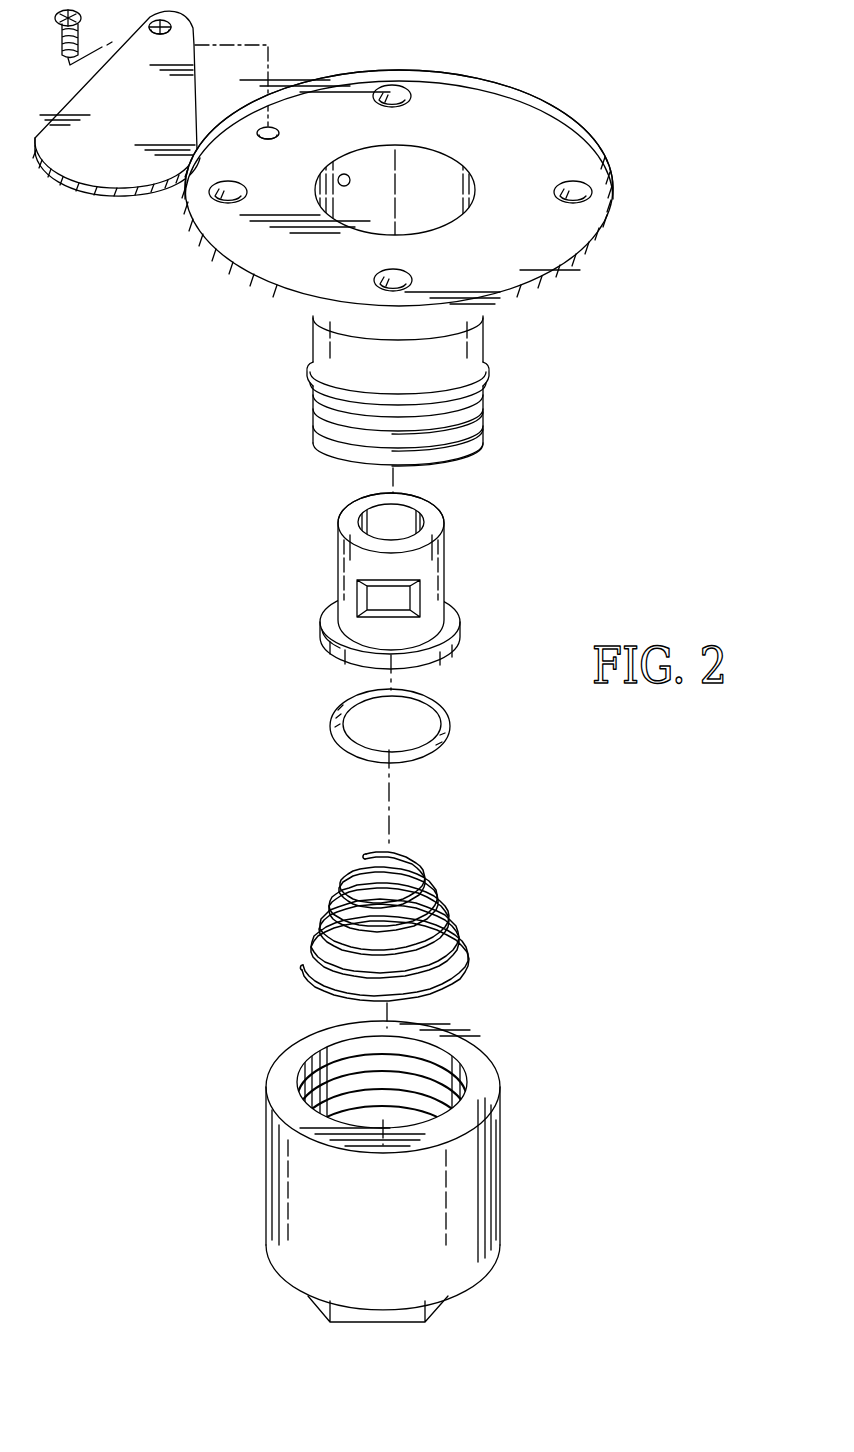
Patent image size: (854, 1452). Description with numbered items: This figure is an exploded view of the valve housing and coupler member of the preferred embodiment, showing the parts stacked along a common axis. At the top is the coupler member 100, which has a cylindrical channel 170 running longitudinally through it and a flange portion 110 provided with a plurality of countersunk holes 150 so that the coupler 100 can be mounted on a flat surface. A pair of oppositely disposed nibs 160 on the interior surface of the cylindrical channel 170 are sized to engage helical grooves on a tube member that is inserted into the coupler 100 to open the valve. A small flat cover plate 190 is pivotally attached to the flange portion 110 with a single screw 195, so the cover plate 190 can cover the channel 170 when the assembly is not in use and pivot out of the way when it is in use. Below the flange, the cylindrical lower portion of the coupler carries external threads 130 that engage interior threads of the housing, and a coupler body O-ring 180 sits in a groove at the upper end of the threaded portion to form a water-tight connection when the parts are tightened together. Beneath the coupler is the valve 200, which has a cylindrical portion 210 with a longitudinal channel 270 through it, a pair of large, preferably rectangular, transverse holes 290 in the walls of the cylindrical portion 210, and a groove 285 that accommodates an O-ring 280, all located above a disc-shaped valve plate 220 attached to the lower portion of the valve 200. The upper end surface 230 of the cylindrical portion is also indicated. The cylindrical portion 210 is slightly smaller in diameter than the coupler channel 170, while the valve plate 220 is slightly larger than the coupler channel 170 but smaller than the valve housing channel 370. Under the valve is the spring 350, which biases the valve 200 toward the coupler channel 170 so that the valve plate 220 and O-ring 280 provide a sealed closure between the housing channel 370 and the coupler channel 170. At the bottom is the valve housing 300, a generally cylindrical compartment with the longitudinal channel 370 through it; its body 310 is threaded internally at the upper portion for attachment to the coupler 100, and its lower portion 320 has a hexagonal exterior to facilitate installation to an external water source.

The coupler member 100 is at (411, 251).
The flange portion 110 is at (576, 233).
The external threads 130 is at (439, 391).
The countersunk holes 150 is at (408, 92).
The nibs 160 is at (344, 174).
The cylindrical channel 170 is at (452, 178).
The coupler body O-ring 180 is at (489, 370).
The cover plate 190 is at (90, 175).
The screw 195 is at (85, 16).
The valve 200 is at (383, 580).
The cylindrical portion 210 is at (386, 564).
The valve plate 220 is at (392, 636).
The bushing top surface 230 is at (441, 527).
The longitudinal channel 270 is at (411, 523).
The O-ring 280 is at (336, 738).
The groove 285 is at (332, 636).
The transverse holes 290 is at (406, 596).
The valve housing 300 is at (372, 1169).
The cap body 310 is at (480, 1181).
The lower portion 320 is at (420, 1313).
The spring 350 is at (470, 958).
The longitudinal channel 370 is at (340, 1107).